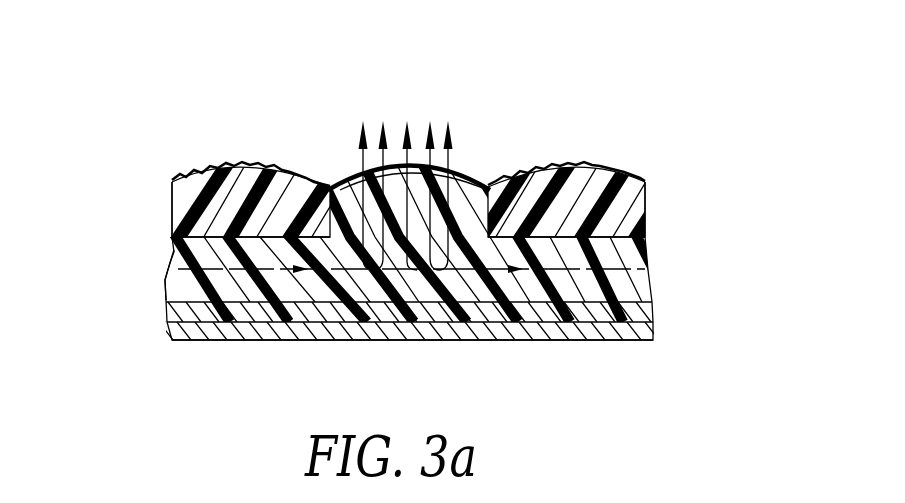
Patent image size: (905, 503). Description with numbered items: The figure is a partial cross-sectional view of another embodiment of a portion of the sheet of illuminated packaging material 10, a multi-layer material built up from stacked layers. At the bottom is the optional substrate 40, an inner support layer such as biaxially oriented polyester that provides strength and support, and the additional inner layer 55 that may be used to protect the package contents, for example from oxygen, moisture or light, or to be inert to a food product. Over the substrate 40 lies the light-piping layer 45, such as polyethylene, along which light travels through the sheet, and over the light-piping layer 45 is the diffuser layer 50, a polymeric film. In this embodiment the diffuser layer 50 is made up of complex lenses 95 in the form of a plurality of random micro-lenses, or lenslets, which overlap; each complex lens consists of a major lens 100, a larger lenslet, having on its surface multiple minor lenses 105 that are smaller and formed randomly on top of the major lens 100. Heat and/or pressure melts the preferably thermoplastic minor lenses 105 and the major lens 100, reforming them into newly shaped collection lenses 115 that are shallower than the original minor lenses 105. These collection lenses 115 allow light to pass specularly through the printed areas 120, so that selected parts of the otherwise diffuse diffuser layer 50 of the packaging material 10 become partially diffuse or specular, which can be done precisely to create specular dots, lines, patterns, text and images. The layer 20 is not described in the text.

The sheet of illuminated packaging material 10 is at (236, 370).
The light guide layer 20 is at (645, 259).
The substrate 40 is at (647, 306).
The light-piping layer 45 is at (193, 286).
The diffuser layer 50 is at (643, 233).
The inner layer 55 is at (650, 330).
The complex lenses 95 is at (242, 136).
The major lens 100 is at (173, 213).
The minor lenses 105 is at (193, 167).
The collection lenses 115 is at (490, 165).
The printed areas 120 is at (490, 165).